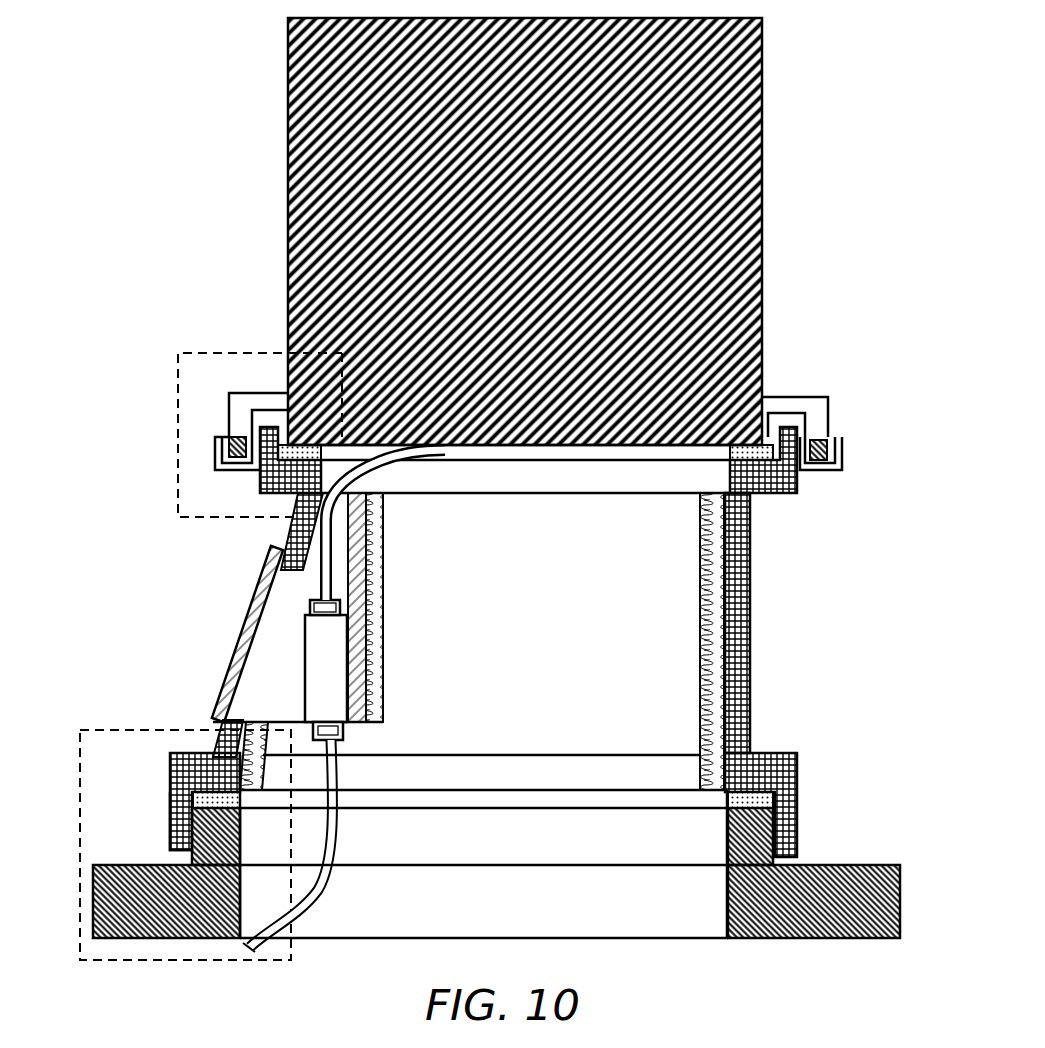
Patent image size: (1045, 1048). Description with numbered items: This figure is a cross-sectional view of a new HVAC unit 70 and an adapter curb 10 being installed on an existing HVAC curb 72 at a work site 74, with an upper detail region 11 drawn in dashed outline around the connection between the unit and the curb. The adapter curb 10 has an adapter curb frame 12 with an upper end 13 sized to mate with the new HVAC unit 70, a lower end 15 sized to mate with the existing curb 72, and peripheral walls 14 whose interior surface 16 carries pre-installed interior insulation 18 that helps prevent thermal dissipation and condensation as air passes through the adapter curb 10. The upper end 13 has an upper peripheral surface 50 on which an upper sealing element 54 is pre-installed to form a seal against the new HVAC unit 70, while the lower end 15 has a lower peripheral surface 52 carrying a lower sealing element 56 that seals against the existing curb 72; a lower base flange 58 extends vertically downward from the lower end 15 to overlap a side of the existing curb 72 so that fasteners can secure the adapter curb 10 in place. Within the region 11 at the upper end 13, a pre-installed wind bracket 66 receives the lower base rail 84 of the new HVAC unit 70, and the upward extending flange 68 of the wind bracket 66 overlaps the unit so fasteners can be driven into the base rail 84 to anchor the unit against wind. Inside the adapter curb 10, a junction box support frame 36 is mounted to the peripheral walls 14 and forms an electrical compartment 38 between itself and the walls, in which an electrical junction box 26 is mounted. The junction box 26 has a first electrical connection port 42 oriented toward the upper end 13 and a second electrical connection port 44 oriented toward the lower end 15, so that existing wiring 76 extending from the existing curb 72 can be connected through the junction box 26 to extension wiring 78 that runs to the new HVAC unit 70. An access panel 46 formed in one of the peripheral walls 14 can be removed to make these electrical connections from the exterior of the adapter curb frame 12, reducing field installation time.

The adapter curb 10 is at (860, 550).
The upper bracket assembly 11 is at (177, 378).
The adapter curb frame 12 is at (150, 728).
The upper end 13 is at (802, 477).
The peripheral walls 14 is at (742, 584).
The lower end 15 is at (801, 752).
The interior surface 16 is at (706, 532).
The interior insulation 18 is at (706, 650).
The electrical junction box 26 is at (340, 665).
The junction box support frame 36 is at (362, 573).
The electrical compartment 38 is at (262, 671).
The first electrical connection port 42 is at (372, 615).
The second electrical connection port 44 is at (345, 729).
The access panel 46 is at (252, 603).
The upper peripheral surface 50 is at (781, 400).
The lower peripheral surface 52 is at (172, 763).
The upper sealing element 54 is at (765, 440).
The lower sealing element 56 is at (172, 800).
The lower base flange 58 is at (172, 827).
The wind bracket 66 is at (212, 467).
The upward extending flange 68 is at (214, 438).
The new HVAC unit 70 is at (728, 70).
The existing HVAC curb 72 is at (760, 838).
The work site 74 is at (797, 923).
The existing wiring 76 is at (333, 828).
The extension wiring 78 is at (262, 478).
The lower base rail 84 is at (263, 393).